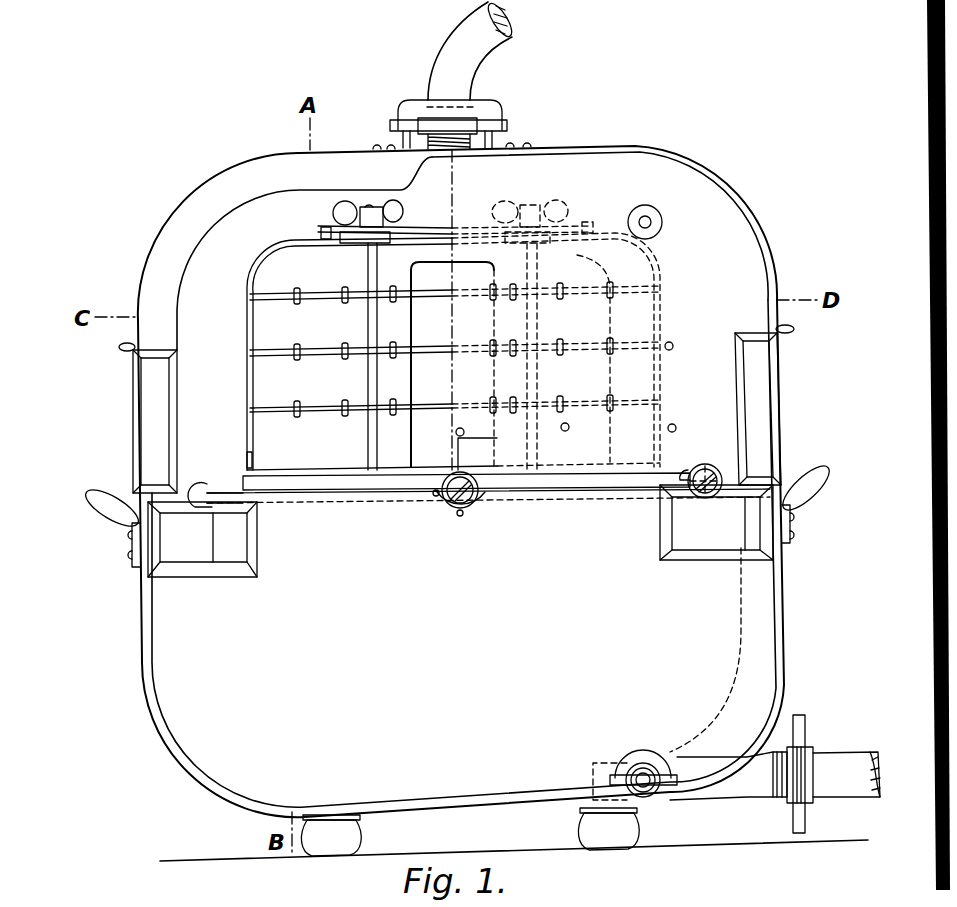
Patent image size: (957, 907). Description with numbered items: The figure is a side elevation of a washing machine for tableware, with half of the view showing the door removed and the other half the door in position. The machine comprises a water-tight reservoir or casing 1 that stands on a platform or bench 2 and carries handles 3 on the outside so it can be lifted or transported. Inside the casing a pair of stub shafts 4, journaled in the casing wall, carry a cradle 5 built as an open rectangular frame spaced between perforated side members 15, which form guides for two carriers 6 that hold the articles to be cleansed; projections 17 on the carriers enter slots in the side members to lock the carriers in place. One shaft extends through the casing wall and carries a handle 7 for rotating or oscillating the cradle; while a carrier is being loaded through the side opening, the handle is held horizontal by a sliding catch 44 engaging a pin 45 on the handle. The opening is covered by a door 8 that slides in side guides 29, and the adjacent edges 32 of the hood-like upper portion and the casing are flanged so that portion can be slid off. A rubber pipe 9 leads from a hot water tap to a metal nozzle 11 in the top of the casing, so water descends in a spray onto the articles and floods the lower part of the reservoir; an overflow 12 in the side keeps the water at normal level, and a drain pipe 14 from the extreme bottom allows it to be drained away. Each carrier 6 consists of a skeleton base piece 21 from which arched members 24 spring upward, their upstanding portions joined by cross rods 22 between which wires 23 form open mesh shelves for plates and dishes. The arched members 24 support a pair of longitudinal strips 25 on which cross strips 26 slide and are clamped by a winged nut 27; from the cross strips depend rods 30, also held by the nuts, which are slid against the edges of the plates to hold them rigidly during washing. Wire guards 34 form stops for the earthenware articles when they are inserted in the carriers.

The reservoir or casing 1 is at (461, 501).
The platform or bench 2 is at (686, 844).
The handles 3 is at (104, 502).
The stub shafts 4 is at (480, 502).
The cradle 5 is at (351, 492).
The carriers 6 is at (272, 378).
The handle 7 is at (707, 464).
The door 8 is at (556, 160).
The rubber pipe 9 is at (446, 62).
The metal nozzle 11 is at (458, 150).
The overflow 12 is at (741, 580).
The drain pipe 14 is at (866, 765).
The side members 15 is at (246, 455).
The projections 17 is at (243, 482).
The skeleton base piece 21 is at (303, 476).
The cross rods 22 is at (322, 302).
The wires 23 is at (348, 408).
The arched members 24 is at (248, 318).
The longitudinal strips 25 is at (330, 230).
The cross strips 26 is at (445, 231).
The winged nut 27 is at (377, 205).
The side guides 29 is at (150, 432).
The rods 30 is at (372, 246).
The adjacent edges 32 is at (128, 352).
The wire guards 34 is at (416, 428).
The sliding catch 44 is at (204, 484).
The pin 45 is at (695, 500).